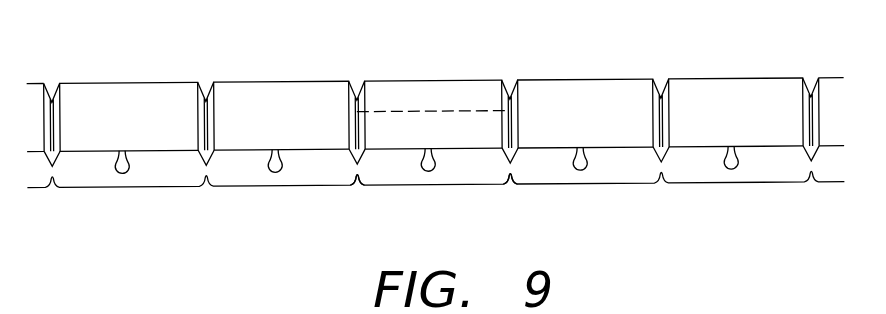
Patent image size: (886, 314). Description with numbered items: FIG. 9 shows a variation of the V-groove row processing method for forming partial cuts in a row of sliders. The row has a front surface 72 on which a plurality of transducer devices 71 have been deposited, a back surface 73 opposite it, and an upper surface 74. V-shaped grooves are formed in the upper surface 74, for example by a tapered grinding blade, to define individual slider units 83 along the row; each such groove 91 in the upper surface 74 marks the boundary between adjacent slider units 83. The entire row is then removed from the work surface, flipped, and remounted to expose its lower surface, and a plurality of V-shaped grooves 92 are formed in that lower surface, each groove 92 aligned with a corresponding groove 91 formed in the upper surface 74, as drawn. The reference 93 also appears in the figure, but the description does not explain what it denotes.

The transducer devices 71 is at (431, 167).
The front surface 72 is at (554, 172).
The back surface 73 is at (425, 100).
The upper surface 74 is at (296, 98).
The slider units 83 is at (508, 197).
The groove 91 is at (357, 82).
The V-shaped grooves 92 is at (357, 185).
The notch apex 93 is at (355, 170).